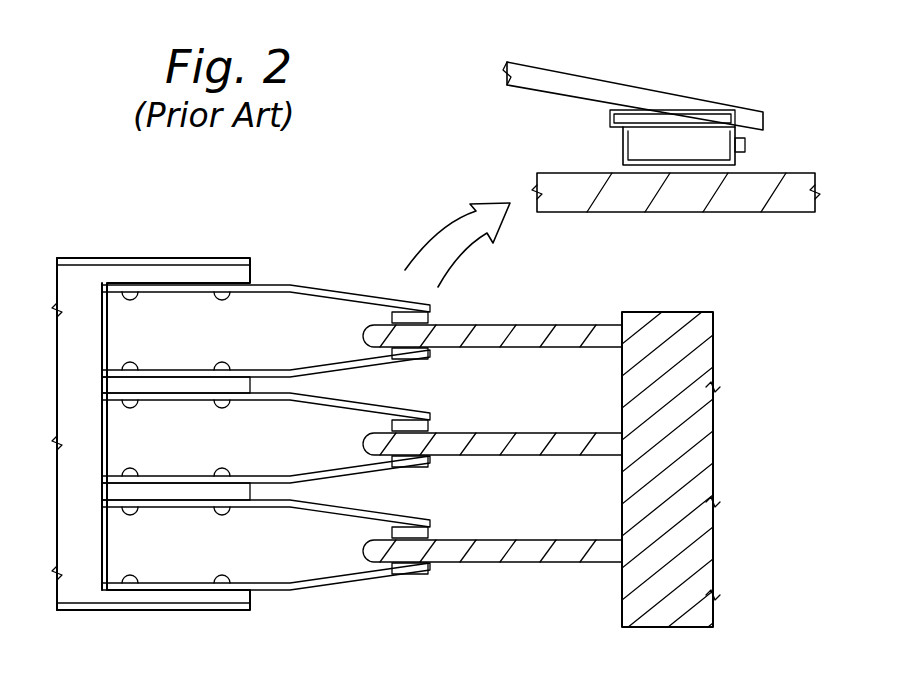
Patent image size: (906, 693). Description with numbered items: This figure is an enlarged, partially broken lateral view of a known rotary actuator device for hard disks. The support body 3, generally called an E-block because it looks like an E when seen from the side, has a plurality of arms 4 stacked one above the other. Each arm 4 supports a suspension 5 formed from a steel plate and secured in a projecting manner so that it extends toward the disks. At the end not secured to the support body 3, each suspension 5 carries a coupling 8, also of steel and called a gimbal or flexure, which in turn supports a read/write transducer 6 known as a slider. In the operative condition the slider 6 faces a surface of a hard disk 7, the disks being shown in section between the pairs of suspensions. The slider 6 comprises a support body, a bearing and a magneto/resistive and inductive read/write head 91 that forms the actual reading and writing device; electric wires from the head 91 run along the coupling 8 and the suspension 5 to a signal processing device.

The support body 3 is at (70, 262).
The arm 4 is at (170, 275).
The suspension 5 is at (335, 290).
The read/write transducer 6 is at (438, 316).
The hard disk 7 is at (533, 337).
The coupling 8 is at (615, 118).
The read/write head 91 is at (745, 148).